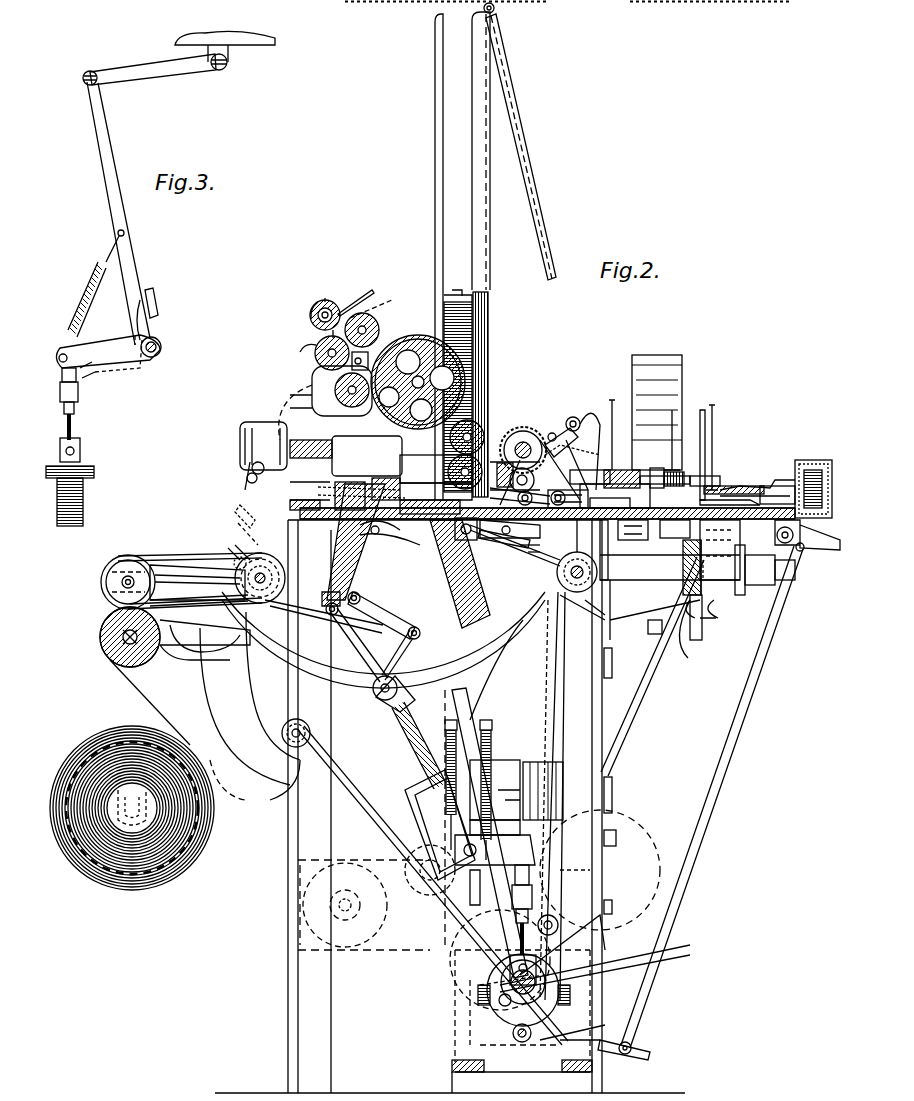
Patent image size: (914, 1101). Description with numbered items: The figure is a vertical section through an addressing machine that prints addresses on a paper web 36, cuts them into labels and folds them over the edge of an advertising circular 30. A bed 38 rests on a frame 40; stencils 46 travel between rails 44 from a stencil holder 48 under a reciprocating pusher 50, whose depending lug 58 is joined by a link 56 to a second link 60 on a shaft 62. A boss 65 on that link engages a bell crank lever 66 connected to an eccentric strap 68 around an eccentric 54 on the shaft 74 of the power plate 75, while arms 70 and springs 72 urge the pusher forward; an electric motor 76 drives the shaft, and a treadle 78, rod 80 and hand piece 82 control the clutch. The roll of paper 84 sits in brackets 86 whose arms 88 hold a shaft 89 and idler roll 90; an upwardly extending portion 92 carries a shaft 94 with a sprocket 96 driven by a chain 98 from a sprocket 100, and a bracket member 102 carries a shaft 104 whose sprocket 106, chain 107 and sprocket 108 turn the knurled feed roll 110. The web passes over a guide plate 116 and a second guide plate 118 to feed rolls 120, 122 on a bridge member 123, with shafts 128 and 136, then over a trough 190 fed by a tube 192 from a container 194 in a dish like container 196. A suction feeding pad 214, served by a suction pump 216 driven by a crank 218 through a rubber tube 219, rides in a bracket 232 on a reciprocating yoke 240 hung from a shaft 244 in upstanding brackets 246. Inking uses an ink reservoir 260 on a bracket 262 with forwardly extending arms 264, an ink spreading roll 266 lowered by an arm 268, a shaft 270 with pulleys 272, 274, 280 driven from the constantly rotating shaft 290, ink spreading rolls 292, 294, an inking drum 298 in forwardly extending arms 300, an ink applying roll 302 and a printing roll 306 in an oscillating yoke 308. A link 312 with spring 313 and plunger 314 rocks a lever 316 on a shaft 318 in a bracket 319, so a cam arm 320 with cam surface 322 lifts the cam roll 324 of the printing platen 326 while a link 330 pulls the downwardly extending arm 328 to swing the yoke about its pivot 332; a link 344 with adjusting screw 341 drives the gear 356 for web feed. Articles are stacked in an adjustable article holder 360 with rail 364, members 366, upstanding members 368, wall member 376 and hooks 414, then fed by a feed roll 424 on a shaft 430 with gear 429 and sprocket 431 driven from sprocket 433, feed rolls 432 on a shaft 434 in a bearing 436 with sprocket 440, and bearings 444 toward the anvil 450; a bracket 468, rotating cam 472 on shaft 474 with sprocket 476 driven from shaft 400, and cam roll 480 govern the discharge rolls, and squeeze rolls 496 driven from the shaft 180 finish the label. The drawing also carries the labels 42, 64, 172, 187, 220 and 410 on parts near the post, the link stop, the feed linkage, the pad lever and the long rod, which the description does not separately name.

In FIG. 2, the advertising circular 30 is at (690, 505).
In FIG. 2, the continuous web of paper 36 is at (158, 710).
In FIG. 2, the bed 38 is at (762, 482).
In FIG. 2, the frame 40 is at (298, 845).
In FIG. 2, the post 42 is at (495, 251).
In FIG. 2, the rails 44 is at (374, 489).
In FIG. 2, the stencil 46 is at (490, 330).
In FIG. 2, the stencil holder 48 is at (475, 312).
In FIG. 3, the pusher 50 is at (207, 40).
In FIG. 3, the eccentric 54 is at (83, 502).
In FIG. 2, the eccentric 54 is at (505, 1020).
In FIG. 3, the link 56 is at (157, 72).
In FIG. 3, the depending lug 58 is at (228, 57).
In FIG. 3, the second link 60 is at (118, 168).
In FIG. 2, the second link 60 is at (460, 697).
In FIG. 3, the shaft 62 is at (161, 350).
In FIG. 2, the shaft 62 is at (600, 848).
In FIG. 3, the stop 64 is at (152, 296).
In FIG. 2, the stop 64 is at (496, 786).
In FIG. 3, the boss 65 is at (148, 314).
In FIG. 2, the boss 65 is at (510, 798).
In FIG. 3, the bell crank lever 66 is at (128, 360).
In FIG. 3, the eccentric strap 68 is at (76, 426).
In FIG. 2, the eccentric strap 68 is at (512, 932).
In FIG. 3, the arms 70 is at (98, 348).
In FIG. 2, the arms 70 is at (453, 878).
In FIG. 3, the springs 72 is at (87, 293).
In FIG. 2, the springs 72 is at (445, 745).
In FIG. 3, the shaft 74 is at (88, 462).
In FIG. 2, the shaft 74 is at (600, 957).
In FIG. 2, the power plate 75 is at (395, 830).
In FIG. 2, the electric motor 76 is at (298, 905).
In FIG. 2, the treadle 78 is at (640, 1045).
In FIG. 2, the rod 80 is at (724, 765).
In FIG. 2, the hand piece 82 is at (818, 550).
In FIG. 2, the roll of paper 84 is at (138, 884).
In FIG. 2, the brackets 86 is at (235, 790).
In FIG. 2, the rearwardly extending arms 88 is at (228, 645).
In FIG. 2, the shaft 89 is at (120, 640).
In FIG. 2, the idler roll 90 is at (110, 656).
In FIG. 2, the upwardly extending portion 92 is at (260, 603).
In FIG. 2, the shaft 94 is at (236, 552).
In FIG. 2, the sprocket 96 is at (280, 566).
In FIG. 2, the chain 98 is at (342, 652).
In FIG. 2, the sprocket 100 is at (580, 950).
In FIG. 2, the bracket member 102 is at (186, 572).
In FIG. 2, the shaft 104 is at (122, 586).
In FIG. 2, the sprocket 106 is at (126, 555).
In FIG. 2, the chain 107 is at (160, 556).
In FIG. 2, the sprocket 108 is at (275, 578).
In FIG. 2, the knurled feed roll 110 is at (100, 570).
In FIG. 2, the guide plate 116 is at (328, 470).
In FIG. 2, the second guide plate 118 is at (504, 540).
In FIG. 2, the feed roll 120 is at (527, 503).
In FIG. 2, the feed roll 122 is at (530, 437).
In FIG. 2, the bridge member 123 is at (510, 521).
In FIG. 2, the shaft 128 is at (518, 553).
In FIG. 2, the shaft 136 is at (523, 438).
In FIG. 2, the link 172 is at (521, 561).
In FIG. 2, the shaft 180 is at (577, 590).
In FIG. 2, the link 187 is at (575, 470).
In FIG. 2, the trough 190 is at (568, 504).
In FIG. 2, the tube 192 is at (447, 656).
In FIG. 2, the container 194 is at (248, 422).
In FIG. 2, the dish like container 196 is at (248, 470).
In FIG. 2, the suction feeding pad 214 is at (620, 470).
In FIG. 2, the suction pump 216 is at (545, 762).
In FIG. 2, the crank 218 is at (513, 1003).
In FIG. 2, the rubber tube 219 is at (578, 435).
In FIG. 2, the block 220 is at (614, 455).
In FIG. 2, the bracket 232 is at (648, 474).
In FIG. 2, the reciprocating yoke 240 is at (600, 468).
In FIG. 2, the shaft 244 is at (590, 412).
In FIG. 2, the upstanding brackets 246 is at (566, 418).
In FIG. 2, the ink reservoir 260 is at (330, 299).
In FIG. 2, the bracket 262 is at (290, 392).
In FIG. 2, the forwardly extending arms 264 is at (312, 375).
In FIG. 2, the ink spreading roll 266 is at (312, 344).
In FIG. 2, the arm 268 is at (366, 292).
In FIG. 2, the shaft 270 is at (320, 343).
In FIG. 2, the pulley 272 is at (383, 301).
In FIG. 2, the pulley 274 is at (242, 529).
In FIG. 2, the pulley 280 is at (240, 513).
In FIG. 2, the constantly rotating shaft 290 is at (608, 868).
In FIG. 2, the ink spreading roll 292 is at (378, 322).
In FIG. 2, the ink spreading roll 294 is at (337, 395).
In FIG. 2, the inking drum 298 is at (420, 336).
In FIG. 2, the forwardly extending arms 300 is at (350, 446).
In FIG. 2, the ink applying roll 302 is at (480, 462).
In FIG. 2, the printing roll 306 is at (397, 487).
In FIG. 2, the oscillating yoke 308 is at (436, 477).
In FIG. 2, the link 312 is at (410, 800).
In FIG. 2, the spring 313 is at (405, 752).
In FIG. 2, the plunger 314 is at (380, 706).
In FIG. 2, the lever 316 is at (445, 612).
In FIG. 2, the shaft 318 is at (478, 560).
In FIG. 2, the bracket 319 is at (415, 568).
In FIG. 2, the cam arm 320 is at (378, 608).
In FIG. 2, the cam surface 322 is at (395, 529).
In FIG. 2, the cam roll 324 is at (475, 539).
In FIG. 2, the printing platen 326 is at (395, 544).
In FIG. 2, the downwardly extending arm 328 is at (346, 556).
In FIG. 2, the link 330 is at (358, 597).
In FIG. 2, the pivot 332 is at (340, 496).
In FIG. 2, the adjusting screw 341 is at (378, 365).
In FIG. 2, the link 344 is at (490, 425).
In FIG. 2, the gear 356 is at (542, 430).
In FIG. 2, the adjustable article holder 360 is at (712, 402).
In FIG. 2, the rail 364 is at (716, 480).
In FIG. 2, the members 366 is at (611, 398).
In FIG. 2, the upstanding members 368 is at (708, 420).
In FIG. 2, the wall member 376 is at (670, 356).
In FIG. 2, the shaft 400 is at (635, 575).
In FIG. 2, the rod 410 is at (595, 600).
In FIG. 2, the hooks 414 is at (675, 470).
In FIG. 2, the feed roll 424 is at (673, 527).
In FIG. 2, the gear 429 is at (530, 560).
In FIG. 2, the shaft 430 is at (633, 527).
In FIG. 2, the sprocket 431 is at (720, 490).
In FIG. 2, the feed rolls 432 is at (667, 473).
In FIG. 2, the sprocket 433 is at (690, 622).
In FIG. 2, the shaft 434 is at (752, 480).
In FIG. 2, the bearing 436 is at (805, 460).
In FIG. 2, the sprocket 440 is at (803, 470).
In FIG. 2, the bearings 444 is at (714, 470).
In FIG. 2, the anvil 450 is at (610, 508).
In FIG. 2, the bracket 468 is at (700, 600).
In FIG. 2, the rotating cam 472 is at (727, 612).
In FIG. 2, the shaft 474 is at (740, 580).
In FIG. 2, the sprocket 476 is at (745, 590).
In FIG. 2, the cam roll 480 is at (720, 550).
In FIG. 2, the squeeze rolls 496 is at (676, 634).